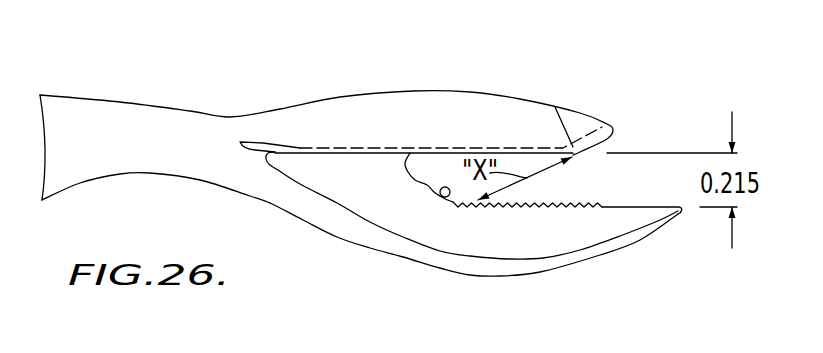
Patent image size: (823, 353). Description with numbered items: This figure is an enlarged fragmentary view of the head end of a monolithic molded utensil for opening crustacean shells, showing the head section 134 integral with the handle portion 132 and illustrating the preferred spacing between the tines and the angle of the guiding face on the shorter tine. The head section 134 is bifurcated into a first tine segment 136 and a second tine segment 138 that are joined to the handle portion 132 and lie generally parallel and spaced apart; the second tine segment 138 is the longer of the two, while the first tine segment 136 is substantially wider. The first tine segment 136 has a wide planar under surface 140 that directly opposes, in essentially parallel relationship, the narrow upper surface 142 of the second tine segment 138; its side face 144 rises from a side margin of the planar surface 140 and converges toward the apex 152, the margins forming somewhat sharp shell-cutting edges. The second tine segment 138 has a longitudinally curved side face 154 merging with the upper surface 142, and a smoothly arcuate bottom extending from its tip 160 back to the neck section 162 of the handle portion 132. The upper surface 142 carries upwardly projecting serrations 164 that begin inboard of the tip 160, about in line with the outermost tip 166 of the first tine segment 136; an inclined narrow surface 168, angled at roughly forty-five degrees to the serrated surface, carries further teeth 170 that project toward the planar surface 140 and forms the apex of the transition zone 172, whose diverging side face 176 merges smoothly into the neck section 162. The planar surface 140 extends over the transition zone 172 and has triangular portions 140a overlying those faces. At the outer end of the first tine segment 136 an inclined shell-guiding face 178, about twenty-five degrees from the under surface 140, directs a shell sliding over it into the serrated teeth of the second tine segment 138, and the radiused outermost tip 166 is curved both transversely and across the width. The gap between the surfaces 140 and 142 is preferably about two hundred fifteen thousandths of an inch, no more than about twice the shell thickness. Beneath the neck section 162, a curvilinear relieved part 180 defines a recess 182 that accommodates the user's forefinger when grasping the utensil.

The handle portion 132 is at (62, 88).
The head section 134 is at (383, 64).
The first tine segment 136 is at (522, 88).
The second tine segment 138 is at (500, 285).
The planar under surface 140 is at (432, 153).
The triangular portions 140a is at (362, 152).
The upper surface 142 is at (613, 204).
The side face 144 is at (535, 124).
The apex 152 is at (473, 93).
The side face 154 is at (578, 230).
The tip 160 is at (683, 211).
The neck section 162 is at (170, 140).
The serrations 164 is at (541, 204).
The outermost tip 166 is at (614, 130).
The inclined narrow surface 168 is at (410, 175).
The teeth 170 is at (450, 197).
The transition zone 172 is at (354, 198).
The side face 176 is at (312, 163).
The shell-guiding face 178 is at (612, 141).
The relieved part 180 is at (140, 175).
The recess 182 is at (75, 205).